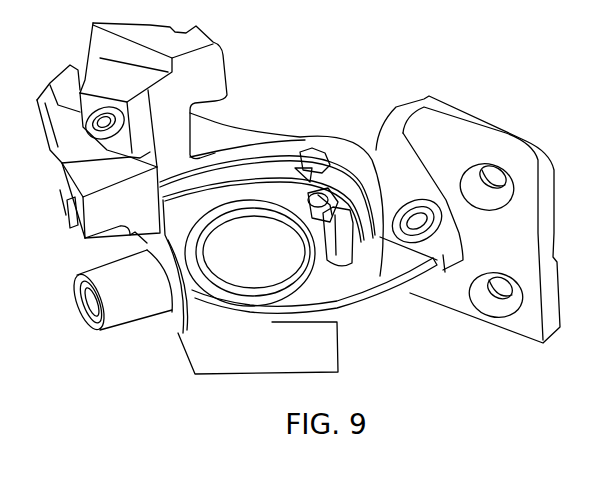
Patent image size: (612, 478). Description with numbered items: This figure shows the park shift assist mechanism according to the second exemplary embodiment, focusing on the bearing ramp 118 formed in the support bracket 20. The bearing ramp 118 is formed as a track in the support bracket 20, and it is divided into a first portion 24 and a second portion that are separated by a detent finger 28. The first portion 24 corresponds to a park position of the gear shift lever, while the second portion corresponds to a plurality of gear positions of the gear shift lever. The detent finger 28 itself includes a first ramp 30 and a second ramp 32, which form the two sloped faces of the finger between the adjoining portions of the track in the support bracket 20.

The support bracket 20 is at (451, 155).
The first portion 24 is at (318, 198).
The detent finger 28 is at (332, 213).
The first ramp 30 is at (328, 216).
The second ramp 32 is at (333, 220).
The bearing ramp 118 is at (356, 208).